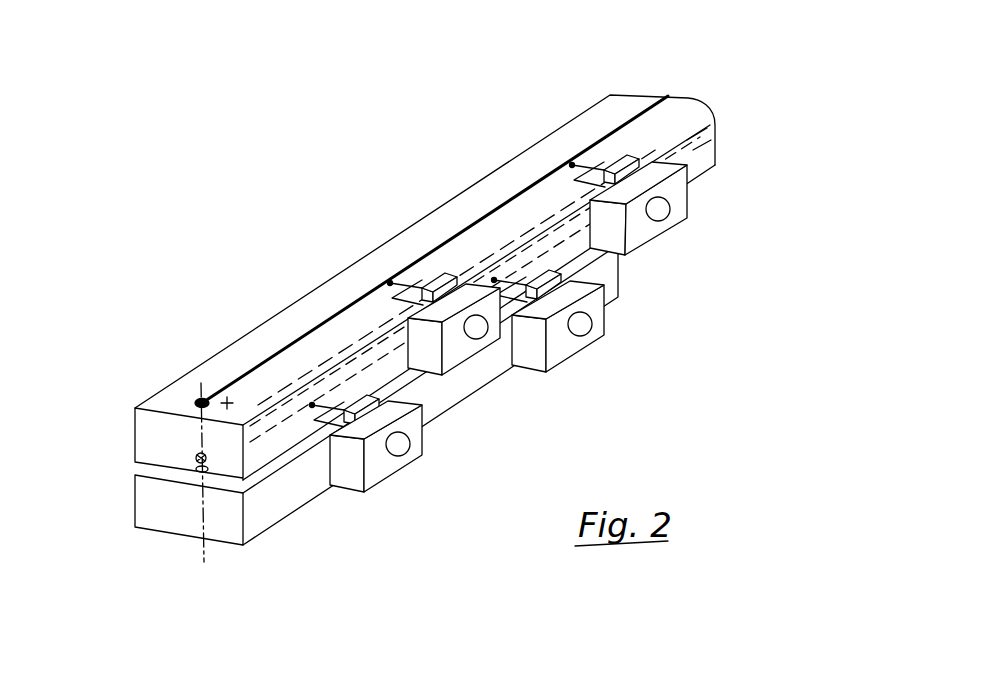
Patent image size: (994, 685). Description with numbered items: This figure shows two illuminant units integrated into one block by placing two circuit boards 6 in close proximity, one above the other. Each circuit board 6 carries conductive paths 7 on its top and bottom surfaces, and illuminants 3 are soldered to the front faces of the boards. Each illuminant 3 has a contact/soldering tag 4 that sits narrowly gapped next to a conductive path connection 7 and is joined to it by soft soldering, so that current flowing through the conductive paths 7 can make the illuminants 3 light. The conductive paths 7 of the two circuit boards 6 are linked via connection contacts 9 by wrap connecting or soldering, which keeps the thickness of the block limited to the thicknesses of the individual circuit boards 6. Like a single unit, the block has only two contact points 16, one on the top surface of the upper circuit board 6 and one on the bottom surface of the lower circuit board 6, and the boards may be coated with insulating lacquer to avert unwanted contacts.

The illuminant 3 is at (600, 300).
The contact/soldering tag 4 is at (619, 160).
The circuit board 6 is at (175, 510).
The conductive path 7 is at (420, 286).
The connection contact 9 is at (215, 484).
The contact point 16 is at (197, 400).